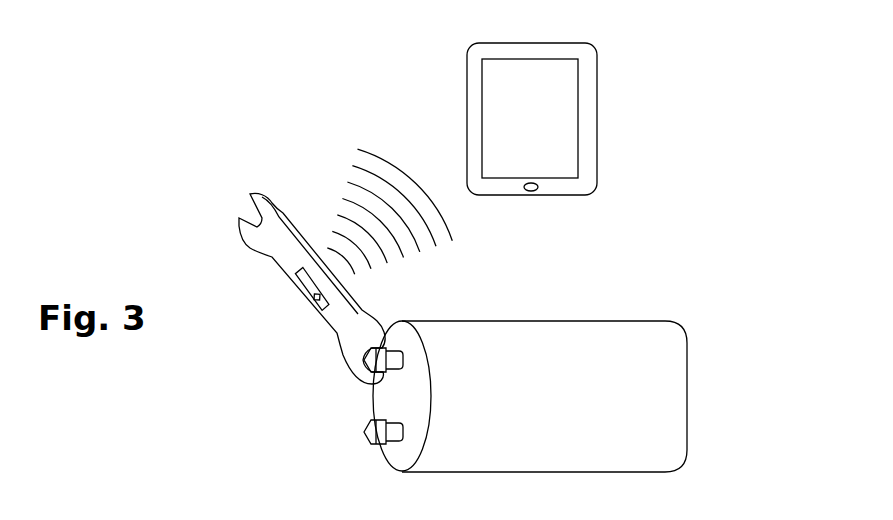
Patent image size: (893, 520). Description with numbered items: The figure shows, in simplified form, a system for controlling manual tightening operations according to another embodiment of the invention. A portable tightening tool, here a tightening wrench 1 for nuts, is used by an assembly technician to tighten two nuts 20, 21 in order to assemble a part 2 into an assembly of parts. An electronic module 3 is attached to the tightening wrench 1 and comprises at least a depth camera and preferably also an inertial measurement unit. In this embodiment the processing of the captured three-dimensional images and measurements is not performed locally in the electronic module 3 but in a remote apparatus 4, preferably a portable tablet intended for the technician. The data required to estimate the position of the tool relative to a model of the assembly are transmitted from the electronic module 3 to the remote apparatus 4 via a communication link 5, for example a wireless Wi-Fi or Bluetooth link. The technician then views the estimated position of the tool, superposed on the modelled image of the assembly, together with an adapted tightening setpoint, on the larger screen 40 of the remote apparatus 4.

The tightening wrench 1 is at (296, 218).
The part 2 is at (595, 350).
The electronic module 3 is at (297, 300).
The remote apparatus 4 is at (530, 119).
The communication link 5 is at (448, 221).
The nut 20 is at (404, 369).
The nut 21 is at (372, 443).
The screen 40 is at (558, 141).